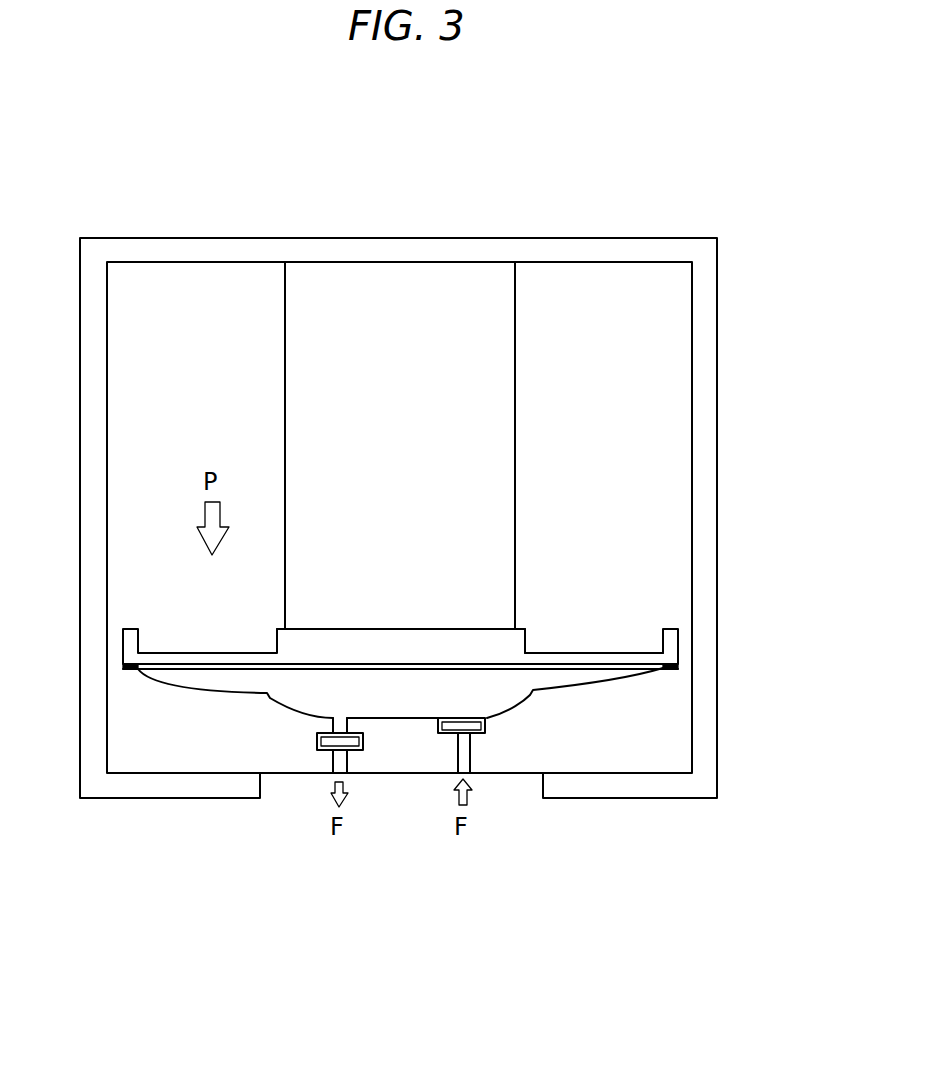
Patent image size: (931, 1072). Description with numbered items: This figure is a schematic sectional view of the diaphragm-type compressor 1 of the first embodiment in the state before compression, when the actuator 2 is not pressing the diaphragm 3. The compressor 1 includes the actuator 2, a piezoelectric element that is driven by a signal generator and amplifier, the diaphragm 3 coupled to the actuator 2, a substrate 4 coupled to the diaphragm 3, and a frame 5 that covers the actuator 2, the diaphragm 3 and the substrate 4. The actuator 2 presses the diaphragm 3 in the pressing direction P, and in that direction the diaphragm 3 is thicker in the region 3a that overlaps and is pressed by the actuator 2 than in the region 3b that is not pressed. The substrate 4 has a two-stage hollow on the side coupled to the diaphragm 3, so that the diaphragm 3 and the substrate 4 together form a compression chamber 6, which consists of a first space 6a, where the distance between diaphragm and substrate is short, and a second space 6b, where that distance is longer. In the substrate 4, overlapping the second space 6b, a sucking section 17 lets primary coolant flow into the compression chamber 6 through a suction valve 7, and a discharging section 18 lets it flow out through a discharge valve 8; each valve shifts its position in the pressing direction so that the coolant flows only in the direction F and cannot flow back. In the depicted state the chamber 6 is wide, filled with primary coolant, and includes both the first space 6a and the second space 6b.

The diaphragm-type compressor 1 is at (679, 177).
The actuator 2 is at (380, 315).
The diaphragm 3 is at (408, 550).
The region pressed by the actuator 3a is at (477, 642).
The region not pressed by the actuator 3b is at (592, 650).
The substrate 4 is at (155, 727).
The frame 5 is at (184, 249).
The compression chamber 6 is at (425, 802).
The first space 6a is at (577, 678).
The second space 6b is at (515, 700).
The suction valve 7 is at (467, 725).
The discharge valve 8 is at (319, 751).
The sucking section 17 is at (463, 750).
The discharging section 18 is at (342, 757).